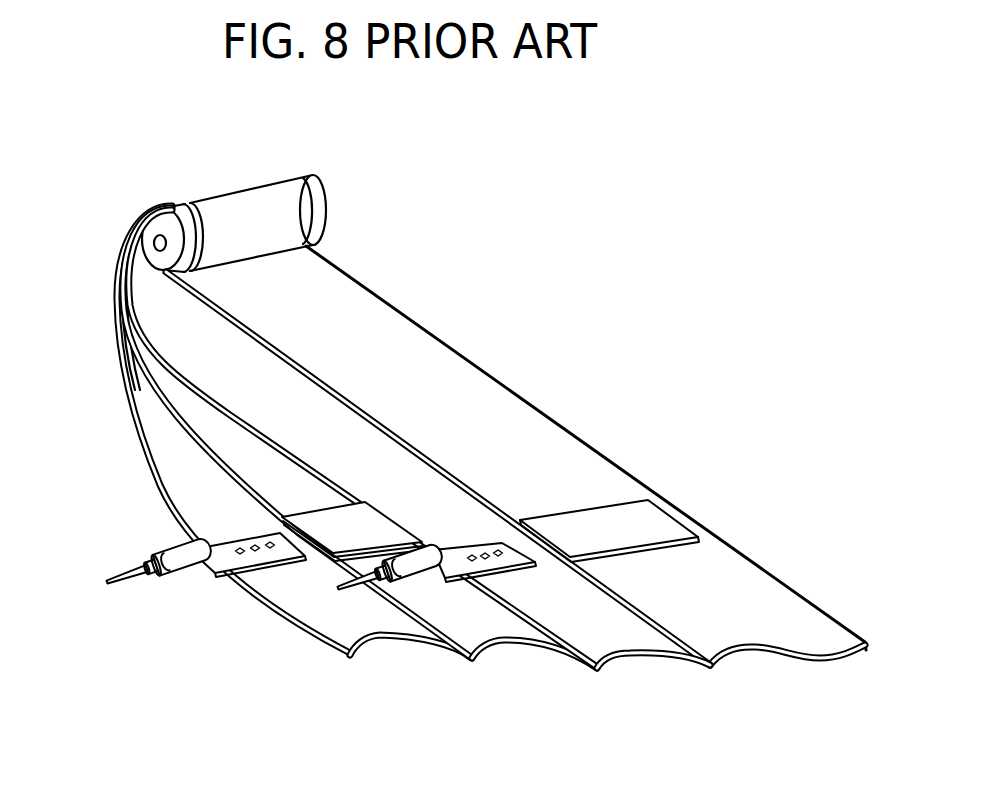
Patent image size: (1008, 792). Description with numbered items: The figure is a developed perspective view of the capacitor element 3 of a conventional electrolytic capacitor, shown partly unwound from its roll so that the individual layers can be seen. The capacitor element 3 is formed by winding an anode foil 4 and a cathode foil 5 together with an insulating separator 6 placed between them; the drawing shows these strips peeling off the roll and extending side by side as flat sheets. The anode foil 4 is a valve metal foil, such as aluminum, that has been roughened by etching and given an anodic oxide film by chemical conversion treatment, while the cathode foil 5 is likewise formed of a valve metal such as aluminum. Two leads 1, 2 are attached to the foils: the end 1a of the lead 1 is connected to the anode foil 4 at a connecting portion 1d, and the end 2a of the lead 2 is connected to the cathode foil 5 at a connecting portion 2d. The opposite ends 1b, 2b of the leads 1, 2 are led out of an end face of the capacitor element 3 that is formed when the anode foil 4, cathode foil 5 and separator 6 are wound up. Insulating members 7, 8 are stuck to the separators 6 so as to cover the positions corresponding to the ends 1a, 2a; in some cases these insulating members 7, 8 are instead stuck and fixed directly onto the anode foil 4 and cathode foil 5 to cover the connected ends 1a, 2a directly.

The lead 1 is at (521, 441).
The end 1a is at (458, 555).
The end 1b is at (423, 557).
The connecting portion 1d is at (512, 540).
The lead 2 is at (204, 622).
The end 2a is at (227, 555).
The end 2b is at (158, 592).
The connecting portion 2d is at (257, 550).
The capacitor element 3 is at (335, 210).
The anode foil 4 is at (615, 610).
The cathode foil 5 is at (352, 622).
The separator 6 is at (477, 610).
The insulating member 7 is at (598, 523).
The insulating member 8 is at (347, 527).